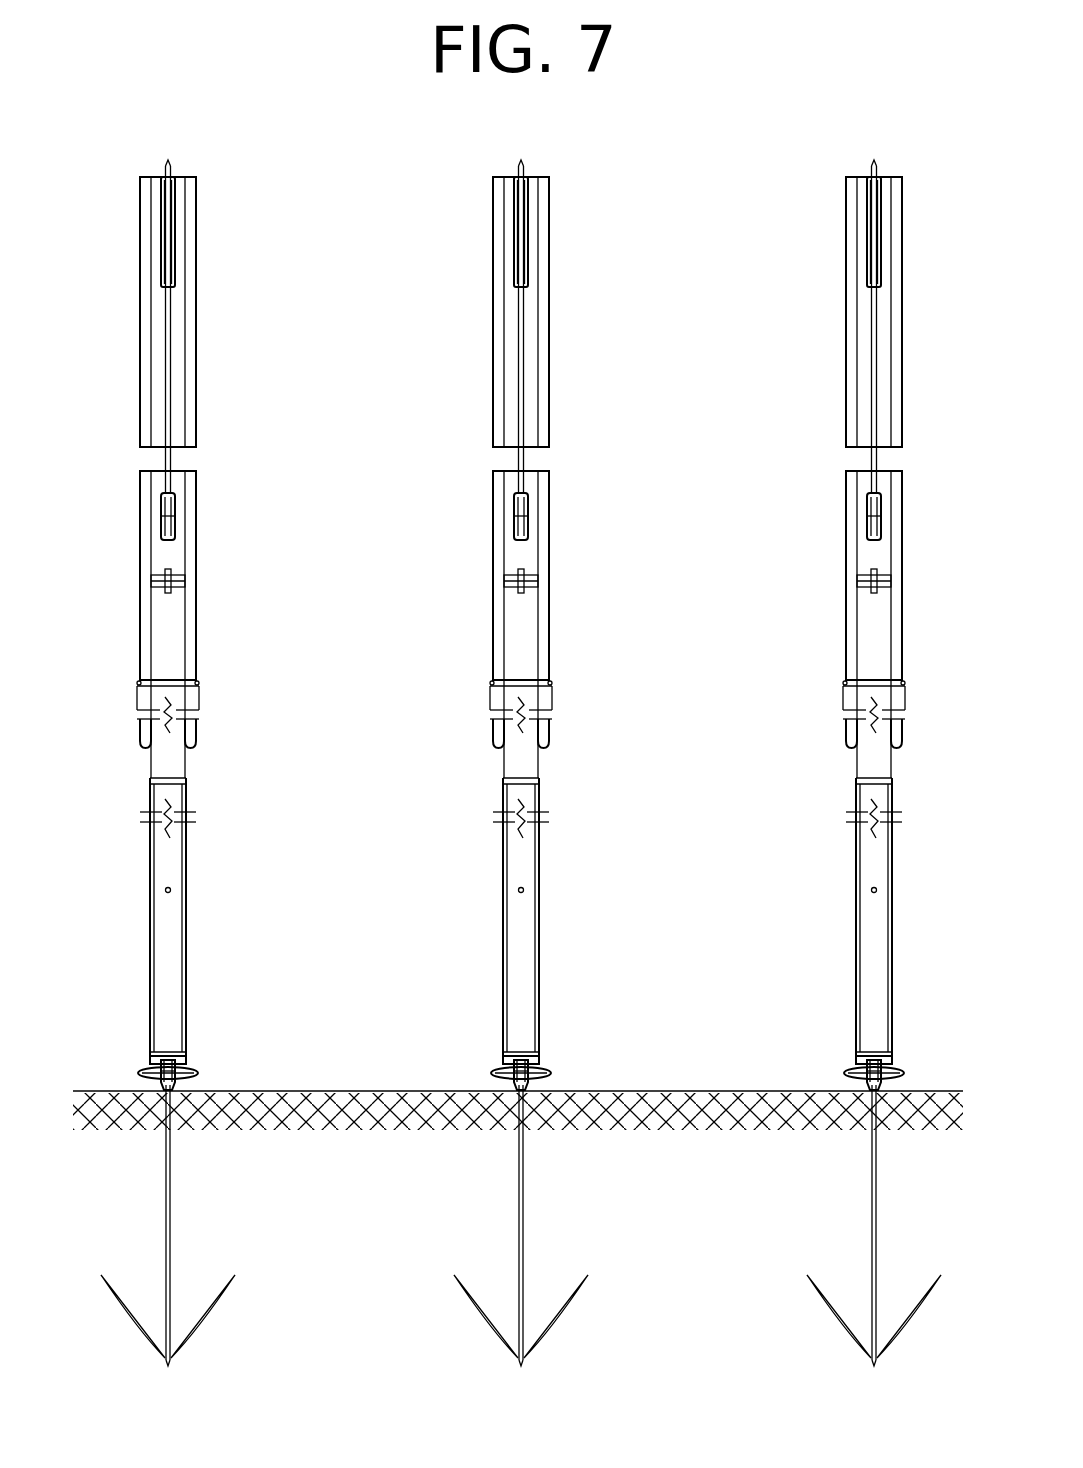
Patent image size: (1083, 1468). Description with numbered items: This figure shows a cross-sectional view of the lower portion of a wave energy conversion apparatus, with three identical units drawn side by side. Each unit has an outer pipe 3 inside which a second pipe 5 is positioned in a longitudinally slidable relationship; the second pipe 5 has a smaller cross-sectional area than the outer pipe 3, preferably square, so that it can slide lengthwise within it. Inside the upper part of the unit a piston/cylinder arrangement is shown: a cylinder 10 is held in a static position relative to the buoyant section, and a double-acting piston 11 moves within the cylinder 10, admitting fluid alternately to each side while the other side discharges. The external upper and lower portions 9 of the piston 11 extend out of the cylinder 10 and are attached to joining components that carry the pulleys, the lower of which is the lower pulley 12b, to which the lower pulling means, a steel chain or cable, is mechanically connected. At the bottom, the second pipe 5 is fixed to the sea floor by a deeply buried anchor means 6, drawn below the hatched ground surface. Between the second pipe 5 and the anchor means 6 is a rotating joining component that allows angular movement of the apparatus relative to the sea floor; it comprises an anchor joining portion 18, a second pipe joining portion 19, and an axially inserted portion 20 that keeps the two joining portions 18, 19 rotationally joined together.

The cylinder 10 is at (579, 312).
The double-acting piston 11 is at (459, 241).
The external upper and lower portions of the piston 9 is at (587, 326).
The lower pulley 12b is at (601, 501).
The outer pipe 3 is at (565, 624).
The second pipe 5 is at (562, 917).
The anchor joining portion 18 is at (464, 1029).
The second pipe joining portion 19 is at (563, 1051).
The axially inserted portion 20 is at (579, 1072).
The anchor means 6 is at (551, 1225).